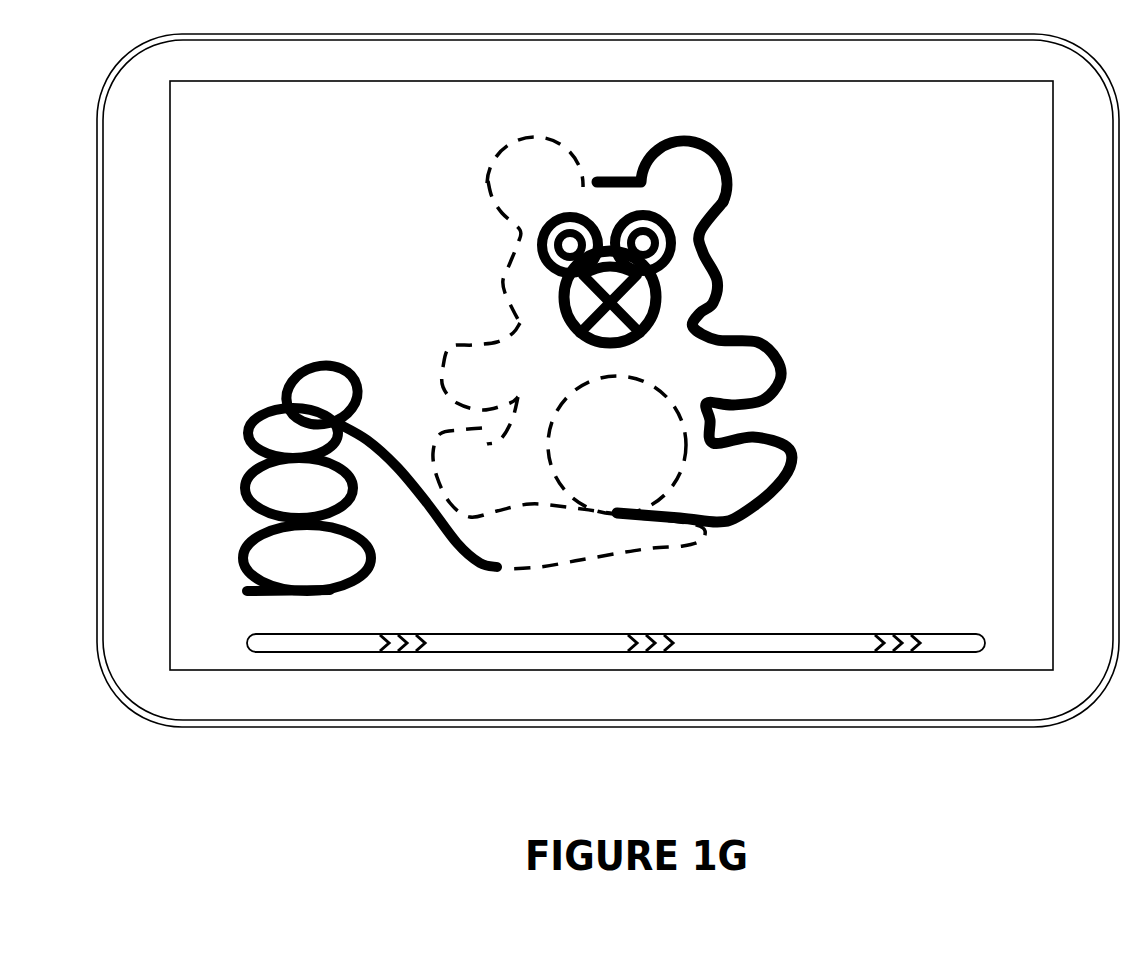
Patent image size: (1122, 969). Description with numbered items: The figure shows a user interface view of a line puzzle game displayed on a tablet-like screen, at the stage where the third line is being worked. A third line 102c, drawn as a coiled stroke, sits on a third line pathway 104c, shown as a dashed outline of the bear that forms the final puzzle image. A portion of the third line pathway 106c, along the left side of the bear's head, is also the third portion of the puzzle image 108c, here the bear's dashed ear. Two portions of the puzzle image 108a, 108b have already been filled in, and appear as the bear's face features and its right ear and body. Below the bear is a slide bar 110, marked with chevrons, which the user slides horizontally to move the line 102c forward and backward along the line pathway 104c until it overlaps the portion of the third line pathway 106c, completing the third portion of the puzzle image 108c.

The third line 102c is at (290, 368).
The third line pathway 104c is at (658, 548).
The portion of the third line pathway 106c is at (513, 245).
The portion of the puzzle image 108a is at (663, 303).
The portion of the puzzle image 108b is at (735, 184).
The third portion of the puzzle image 108c is at (600, 182).
The slide bar 110 is at (950, 632).